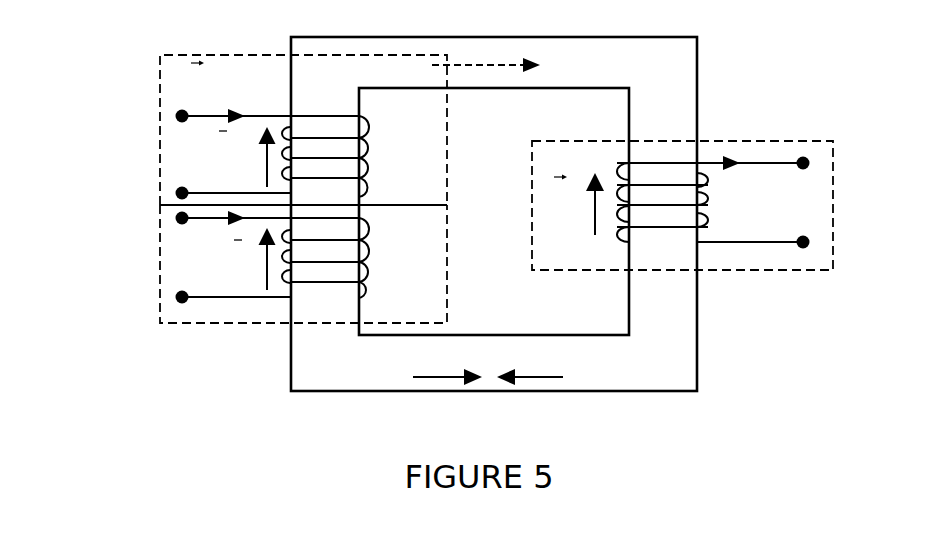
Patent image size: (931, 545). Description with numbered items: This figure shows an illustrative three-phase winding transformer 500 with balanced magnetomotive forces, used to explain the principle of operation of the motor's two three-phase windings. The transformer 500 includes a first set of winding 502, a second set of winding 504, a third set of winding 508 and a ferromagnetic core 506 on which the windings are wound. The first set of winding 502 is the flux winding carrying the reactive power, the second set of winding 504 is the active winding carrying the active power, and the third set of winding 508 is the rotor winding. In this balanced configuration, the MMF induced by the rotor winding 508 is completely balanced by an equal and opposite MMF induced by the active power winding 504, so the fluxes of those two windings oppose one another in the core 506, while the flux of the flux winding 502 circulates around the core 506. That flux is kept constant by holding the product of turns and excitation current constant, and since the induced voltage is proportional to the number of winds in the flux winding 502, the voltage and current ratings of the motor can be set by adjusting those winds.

The three-phase winding transformer 500 is at (116, 201).
The first set of winding 502 is at (158, 105).
The second set of winding 504 is at (160, 250).
The ferromagnetic core 506 is at (697, 95).
The third set of winding 508 is at (755, 271).